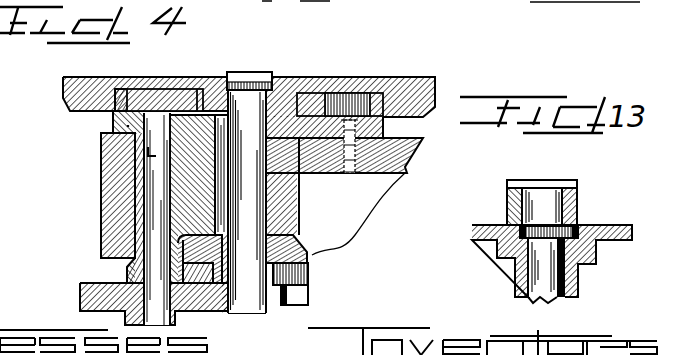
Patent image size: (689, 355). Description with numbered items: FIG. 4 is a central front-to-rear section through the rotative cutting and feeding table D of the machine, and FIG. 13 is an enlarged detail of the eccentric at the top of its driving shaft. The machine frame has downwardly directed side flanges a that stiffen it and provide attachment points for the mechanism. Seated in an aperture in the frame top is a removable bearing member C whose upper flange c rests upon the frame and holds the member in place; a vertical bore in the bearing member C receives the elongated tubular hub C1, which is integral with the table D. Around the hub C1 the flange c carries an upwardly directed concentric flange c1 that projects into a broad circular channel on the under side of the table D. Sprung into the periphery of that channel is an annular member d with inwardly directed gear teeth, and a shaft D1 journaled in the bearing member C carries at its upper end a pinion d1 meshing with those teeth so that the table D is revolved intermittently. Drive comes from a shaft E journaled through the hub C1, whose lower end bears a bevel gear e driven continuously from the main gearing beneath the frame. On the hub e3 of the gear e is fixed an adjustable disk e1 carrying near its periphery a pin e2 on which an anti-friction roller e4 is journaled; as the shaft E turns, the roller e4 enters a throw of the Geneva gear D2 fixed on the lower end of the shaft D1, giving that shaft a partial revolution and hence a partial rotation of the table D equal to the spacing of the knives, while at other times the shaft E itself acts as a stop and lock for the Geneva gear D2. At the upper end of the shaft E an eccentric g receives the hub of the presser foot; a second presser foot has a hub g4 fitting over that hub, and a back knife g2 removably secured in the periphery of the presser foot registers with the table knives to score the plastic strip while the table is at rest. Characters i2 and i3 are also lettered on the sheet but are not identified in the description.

In FIG. 4, the rotative cutting and feeding table D is at (410, 89).
In FIG. 13, the rotative cutting and feeding table D is at (480, 279).
In FIG. 4, the pinion d1 is at (176, 107).
In FIG. 4, the annular member d is at (380, 100).
In FIG. 4, the bearing member C is at (299, 203).
In FIG. 4, the upwardly directed flange c1 is at (304, 115).
In FIG. 4, the flange c is at (383, 138).
In FIG. 4, the tubular hub C1 is at (299, 230).
In FIG. 4, the bevel gear e is at (305, 259).
In FIG. 4, the adjustable disk e1 is at (205, 283).
In FIG. 4, the pin e2 is at (305, 266).
In FIG. 4, the hub e3 is at (275, 292).
In FIG. 4, the anti-friction roller e4 is at (289, 310).
In FIG. 4, the shaft D1 is at (65, 160).
In FIG. 4, the downwardly directed flanges a is at (112, 216).
In FIG. 4, the Geneva gear D2 is at (62, 287).
In FIG. 4, the shaft E is at (247, 113).
In FIG. 13, the shaft E is at (630, 290).
In FIG. 4, the eccentric g is at (252, 76).
In FIG. 13, the eccentric g is at (549, 216).
In FIG. 13, the back knife g2 is at (507, 222).
In FIG. 13, the hub g4 is at (549, 213).
In FIG. 13, the arm i2 is at (561, 0).
In FIG. 13, the arm i3 is at (497, 0).